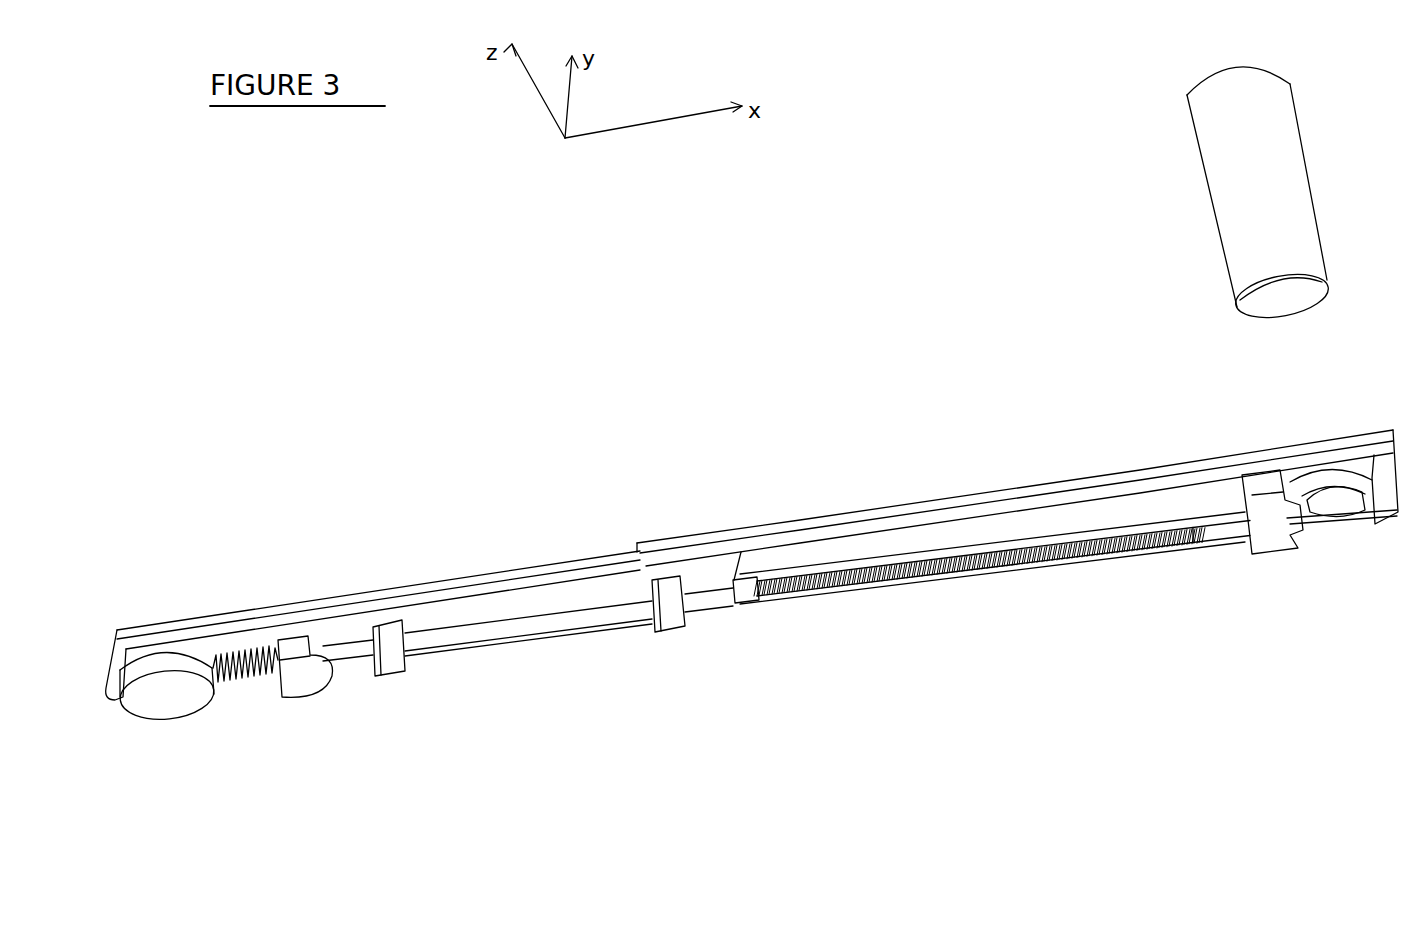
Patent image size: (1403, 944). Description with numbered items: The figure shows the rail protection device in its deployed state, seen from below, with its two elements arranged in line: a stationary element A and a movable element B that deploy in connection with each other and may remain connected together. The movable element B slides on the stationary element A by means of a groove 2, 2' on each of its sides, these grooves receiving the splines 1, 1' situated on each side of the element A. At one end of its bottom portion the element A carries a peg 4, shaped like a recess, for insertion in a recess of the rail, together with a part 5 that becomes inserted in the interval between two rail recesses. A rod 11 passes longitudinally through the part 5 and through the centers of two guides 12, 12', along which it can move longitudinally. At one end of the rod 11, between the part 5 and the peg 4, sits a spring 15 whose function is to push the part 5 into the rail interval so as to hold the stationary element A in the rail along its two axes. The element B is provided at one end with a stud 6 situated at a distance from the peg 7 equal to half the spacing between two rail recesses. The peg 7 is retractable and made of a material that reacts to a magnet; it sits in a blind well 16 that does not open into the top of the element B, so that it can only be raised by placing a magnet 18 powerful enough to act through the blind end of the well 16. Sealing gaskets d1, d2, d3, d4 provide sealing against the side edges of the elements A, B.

The spline 1 is at (580, 655).
The spline 1' is at (405, 547).
The groove 2 is at (995, 597).
The groove 2' is at (1017, 453).
The peg 4 is at (168, 692).
The part 5 is at (300, 664).
The stud 6 is at (1273, 540).
The peg 7 is at (1334, 495).
The rod 11 is at (445, 640).
The guide 12 is at (405, 516).
The guide 12' is at (755, 643).
The spring 15 is at (246, 660).
The blind well 16 is at (1343, 472).
The magnet 18 is at (1233, 213).
The stationary element A is at (453, 610).
The movable element B is at (897, 552).
The sealing gasket d1 is at (490, 573).
The sealing gasket d2 is at (520, 638).
The sealing gasket d3 is at (962, 518).
The sealing gasket d4 is at (997, 572).